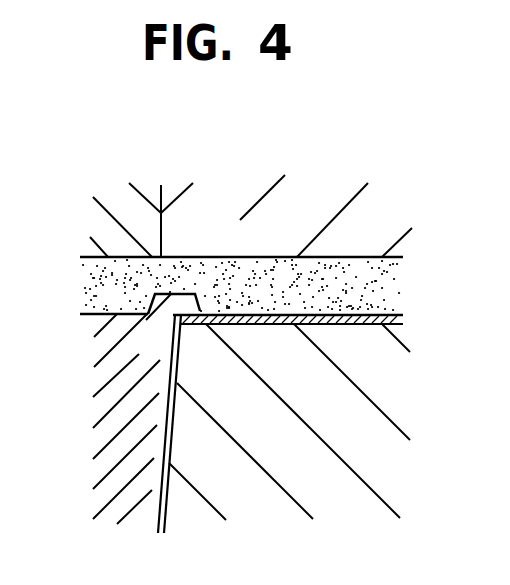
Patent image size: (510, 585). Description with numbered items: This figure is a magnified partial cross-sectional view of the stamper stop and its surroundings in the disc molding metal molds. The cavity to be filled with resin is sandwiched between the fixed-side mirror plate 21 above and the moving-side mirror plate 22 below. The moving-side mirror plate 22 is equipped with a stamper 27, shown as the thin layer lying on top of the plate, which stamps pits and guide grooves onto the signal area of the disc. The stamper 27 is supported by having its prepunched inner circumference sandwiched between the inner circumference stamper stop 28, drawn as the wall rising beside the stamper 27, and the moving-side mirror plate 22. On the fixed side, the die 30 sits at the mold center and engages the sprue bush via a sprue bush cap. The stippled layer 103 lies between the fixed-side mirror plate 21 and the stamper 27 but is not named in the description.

The fixed-side mirror plate 21 is at (367, 225).
The moving-side mirror plate 22 is at (360, 412).
The stamper 27 is at (383, 311).
The inner circumference stamper stop 28 is at (128, 418).
The die 30 is at (113, 233).
The porous layer 103 is at (252, 272).